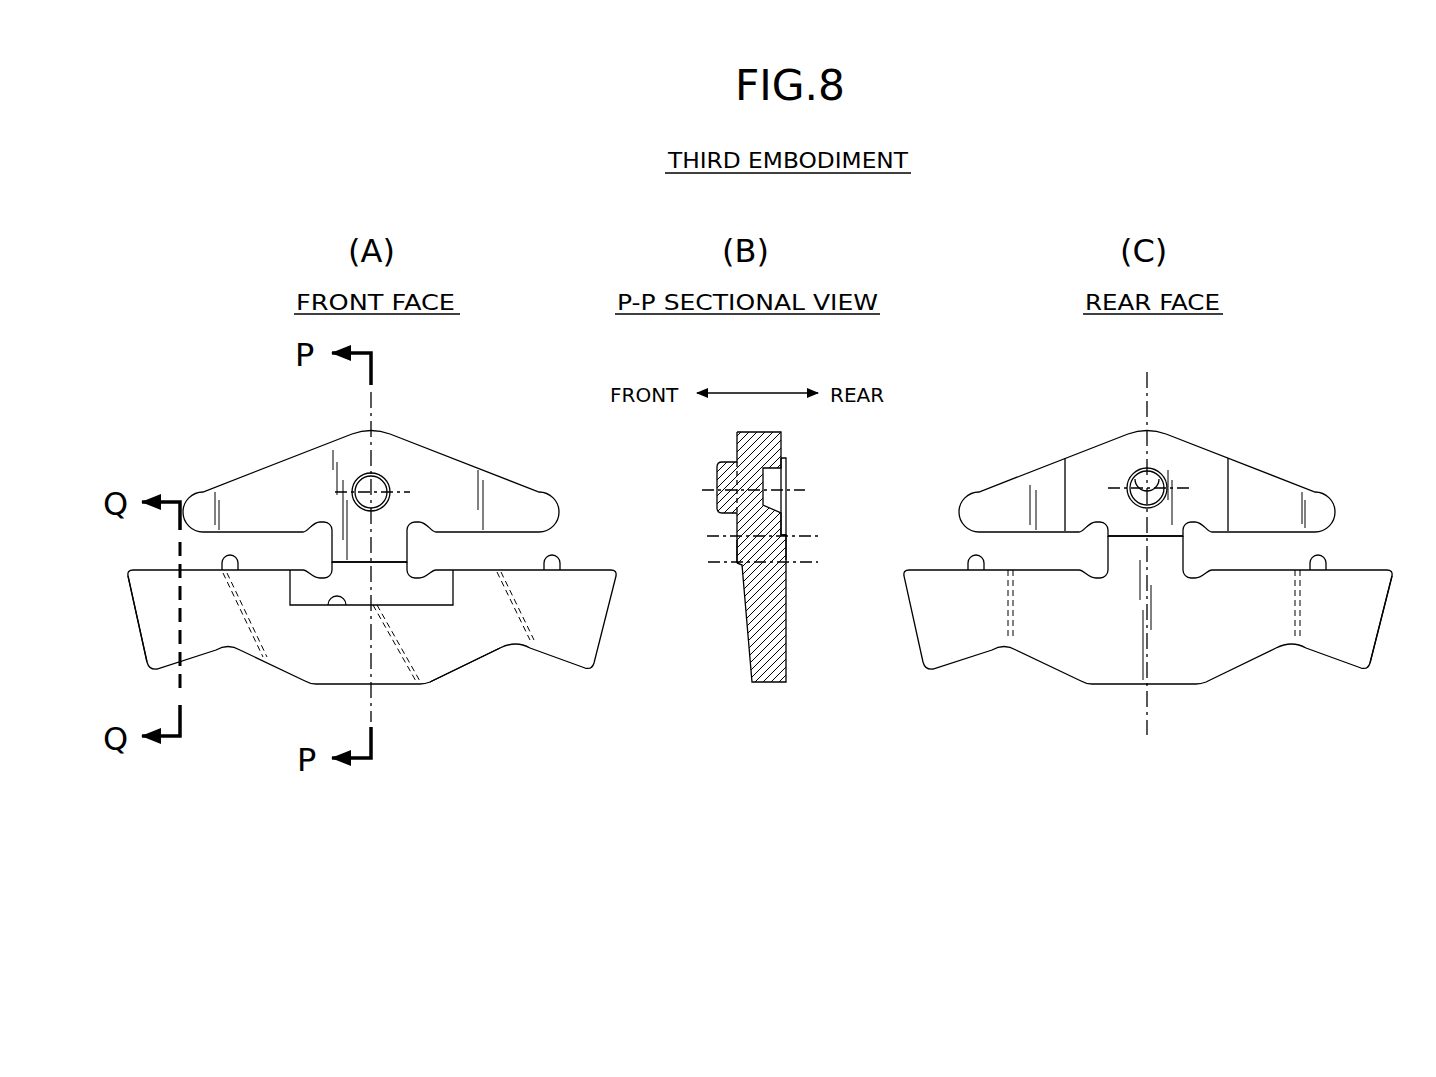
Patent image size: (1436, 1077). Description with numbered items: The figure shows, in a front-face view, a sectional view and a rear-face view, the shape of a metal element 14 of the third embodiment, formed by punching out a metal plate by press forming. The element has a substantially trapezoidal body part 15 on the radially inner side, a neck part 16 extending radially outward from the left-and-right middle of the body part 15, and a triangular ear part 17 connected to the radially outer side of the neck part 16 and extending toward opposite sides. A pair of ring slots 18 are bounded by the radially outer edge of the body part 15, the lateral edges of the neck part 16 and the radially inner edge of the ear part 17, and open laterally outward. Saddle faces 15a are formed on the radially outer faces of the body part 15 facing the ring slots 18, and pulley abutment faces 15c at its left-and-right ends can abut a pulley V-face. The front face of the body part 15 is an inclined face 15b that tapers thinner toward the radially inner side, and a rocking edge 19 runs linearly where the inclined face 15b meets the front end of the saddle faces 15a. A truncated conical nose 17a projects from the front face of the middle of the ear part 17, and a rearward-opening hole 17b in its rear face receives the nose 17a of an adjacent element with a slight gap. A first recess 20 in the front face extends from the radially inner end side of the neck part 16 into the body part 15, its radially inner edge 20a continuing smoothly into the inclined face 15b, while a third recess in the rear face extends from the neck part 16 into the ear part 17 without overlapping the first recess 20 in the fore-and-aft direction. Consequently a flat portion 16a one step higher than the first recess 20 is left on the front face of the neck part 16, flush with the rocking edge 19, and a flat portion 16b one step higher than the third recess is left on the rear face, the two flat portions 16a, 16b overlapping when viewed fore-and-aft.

The metal element 14 is at (484, 452).
The body part 15 is at (286, 676).
The saddle face 15a is at (223, 572).
The inclined face 15b is at (444, 654).
The pulley abutment face 15c is at (137, 626).
The neck part 16 is at (413, 545).
The flat portion 16a is at (397, 557).
The flat portion 16b is at (787, 548).
The ear part 17 is at (268, 464).
The nose 17a is at (380, 484).
The hole 17b is at (766, 481).
The ring slot 18 is at (246, 550).
The rocking edge 19 is at (200, 574).
The first recess 20 is at (359, 598).
The radially inner edge 20a is at (332, 608).